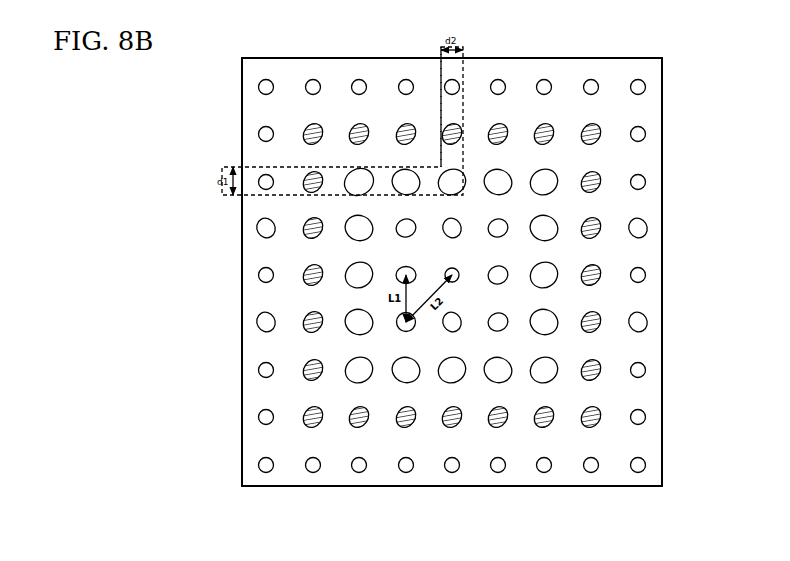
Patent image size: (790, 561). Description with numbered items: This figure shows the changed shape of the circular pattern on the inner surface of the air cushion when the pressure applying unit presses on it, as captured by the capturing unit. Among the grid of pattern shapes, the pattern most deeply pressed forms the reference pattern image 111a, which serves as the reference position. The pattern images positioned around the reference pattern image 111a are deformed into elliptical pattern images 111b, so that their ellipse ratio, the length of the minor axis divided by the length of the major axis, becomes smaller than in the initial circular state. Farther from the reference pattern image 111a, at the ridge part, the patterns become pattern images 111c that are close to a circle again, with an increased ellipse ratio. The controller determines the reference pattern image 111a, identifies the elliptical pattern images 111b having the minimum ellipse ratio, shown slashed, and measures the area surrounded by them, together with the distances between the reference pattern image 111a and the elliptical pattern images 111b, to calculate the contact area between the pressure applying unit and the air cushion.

The reference pattern image 111a is at (452, 275).
The elliptical pattern image 111b is at (305, 127).
The pattern image close to the circle 111c is at (259, 87).